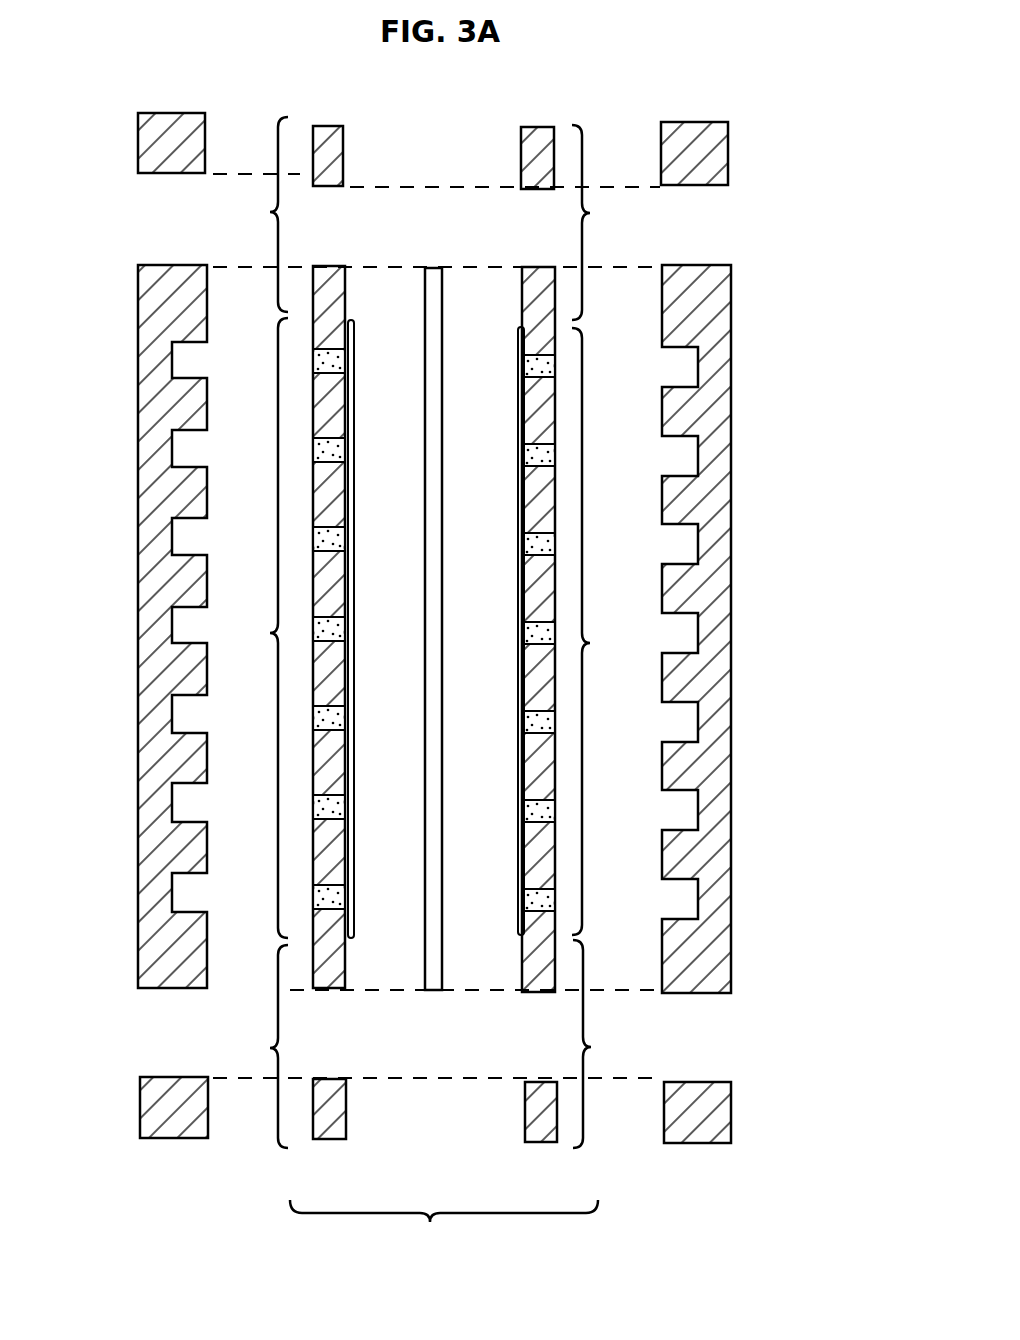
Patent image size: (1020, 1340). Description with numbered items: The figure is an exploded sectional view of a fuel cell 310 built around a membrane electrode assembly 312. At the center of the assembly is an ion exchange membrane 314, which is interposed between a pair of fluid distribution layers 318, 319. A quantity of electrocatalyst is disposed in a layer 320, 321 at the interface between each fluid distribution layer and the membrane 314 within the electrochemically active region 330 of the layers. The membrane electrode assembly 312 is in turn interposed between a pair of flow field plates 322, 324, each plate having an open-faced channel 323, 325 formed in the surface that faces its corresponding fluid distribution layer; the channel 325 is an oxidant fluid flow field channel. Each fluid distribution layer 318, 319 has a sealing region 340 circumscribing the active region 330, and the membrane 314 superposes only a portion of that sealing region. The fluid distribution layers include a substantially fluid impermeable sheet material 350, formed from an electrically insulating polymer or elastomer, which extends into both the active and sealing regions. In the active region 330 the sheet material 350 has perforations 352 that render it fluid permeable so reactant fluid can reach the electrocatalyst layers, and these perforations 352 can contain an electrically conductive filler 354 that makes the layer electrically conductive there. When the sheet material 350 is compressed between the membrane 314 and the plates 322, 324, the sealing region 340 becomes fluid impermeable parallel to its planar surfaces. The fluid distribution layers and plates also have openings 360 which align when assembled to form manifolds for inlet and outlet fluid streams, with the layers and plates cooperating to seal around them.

The fuel cell 310 is at (743, 115).
The membrane electrode assembly 312 is at (444, 1228).
The ion exchange membrane 314 is at (432, 277).
The fluid distribution layer 318 is at (338, 108).
The fluid distribution layer 319 is at (539, 118).
The electrocatalyst layer 320 is at (351, 323).
The electrocatalyst layer 321 is at (518, 900).
The flow field plate 322 is at (148, 963).
The open-faced channel 323 is at (192, 895).
The flow field plate 324 is at (713, 968).
The oxidant fluid flow field channel 325 is at (688, 897).
The electrochemically active region 330 is at (431, 628).
The sealing region 340 is at (428, 632).
The substantially fluid impermeable sheet material 350 is at (330, 1139).
The perforations 352 is at (316, 803).
The electrically conductive filler 354 is at (555, 535).
The openings 360 is at (168, 227).